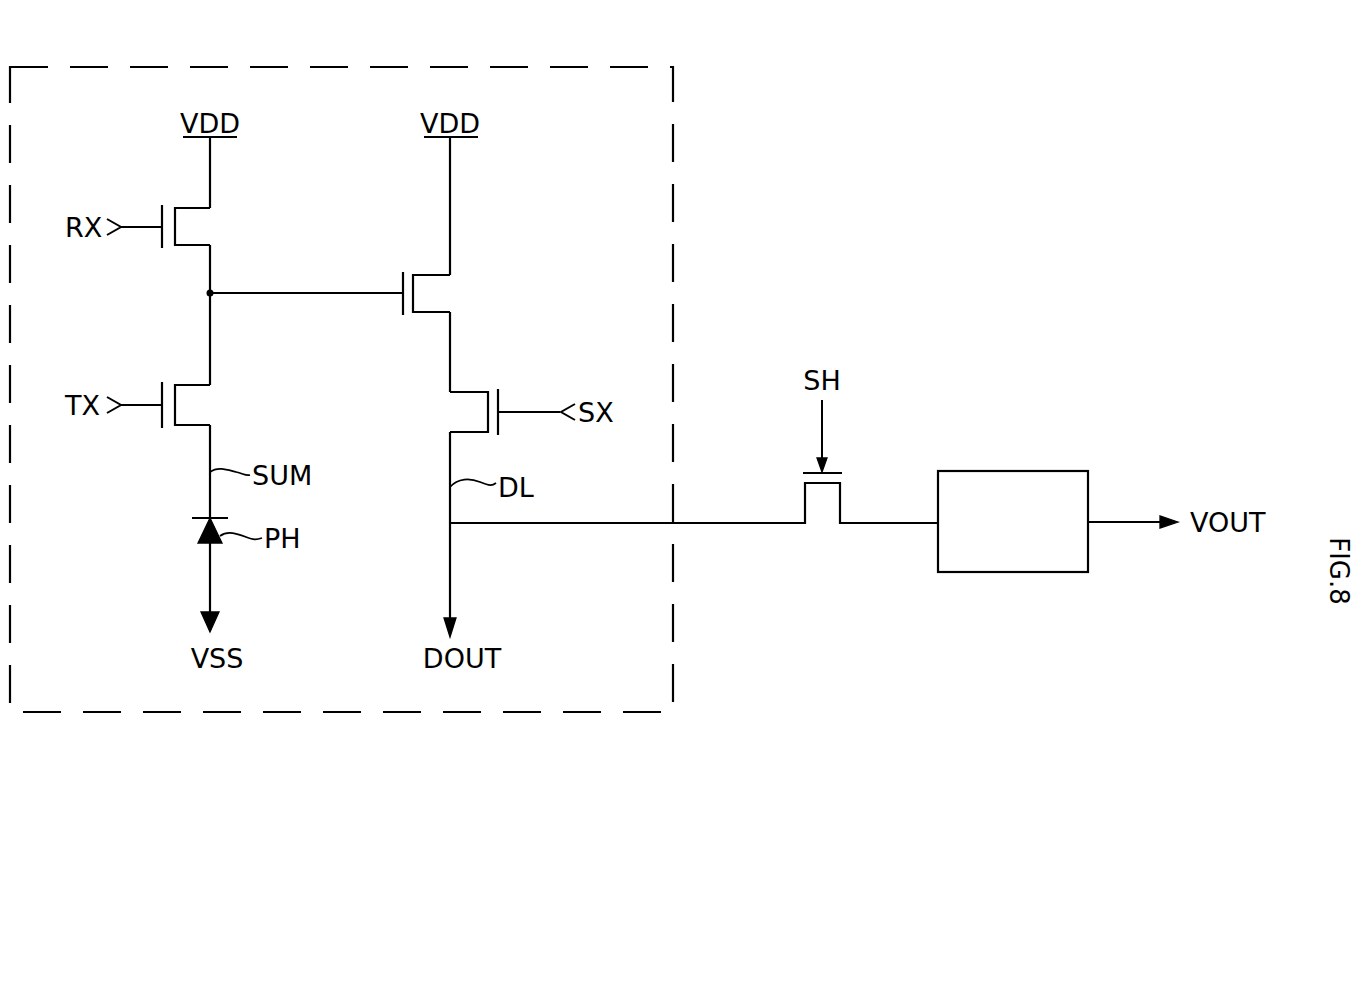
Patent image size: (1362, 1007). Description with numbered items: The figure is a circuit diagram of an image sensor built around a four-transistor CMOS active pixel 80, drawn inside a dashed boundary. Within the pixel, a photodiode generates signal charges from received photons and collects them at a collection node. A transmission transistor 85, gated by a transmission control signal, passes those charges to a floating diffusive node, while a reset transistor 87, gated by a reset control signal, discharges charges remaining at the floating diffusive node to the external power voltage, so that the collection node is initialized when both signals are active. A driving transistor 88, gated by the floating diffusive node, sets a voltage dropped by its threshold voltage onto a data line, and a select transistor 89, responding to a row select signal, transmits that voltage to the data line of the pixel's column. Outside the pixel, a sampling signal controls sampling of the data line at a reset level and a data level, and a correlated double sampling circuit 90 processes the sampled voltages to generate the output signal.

The 4-transistor CMOS active pixel 80 is at (675, 148).
The transmission transistor 85 is at (188, 402).
The reset transistor 87 is at (188, 224).
The driving transistor 88 is at (428, 292).
The select transistor 89 is at (460, 410).
The correlated double sampling circuit 90 is at (990, 471).